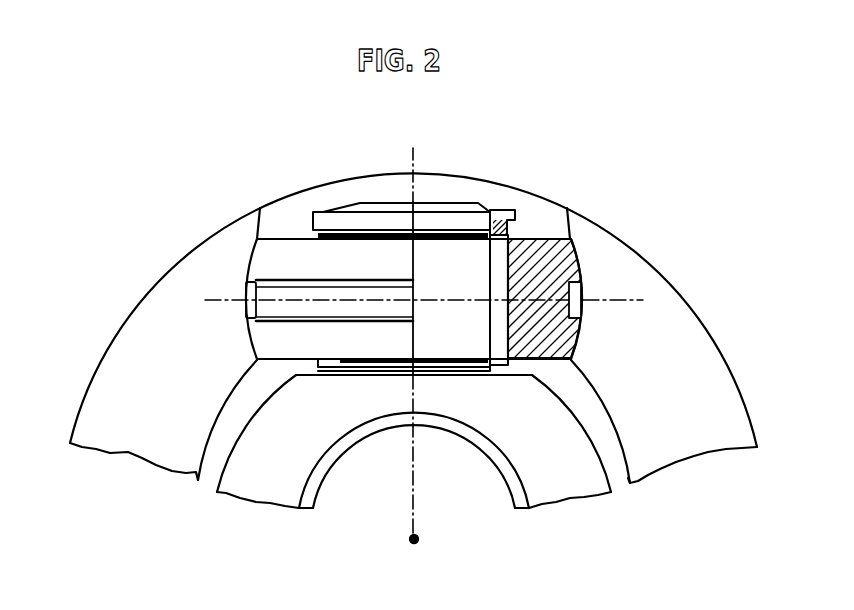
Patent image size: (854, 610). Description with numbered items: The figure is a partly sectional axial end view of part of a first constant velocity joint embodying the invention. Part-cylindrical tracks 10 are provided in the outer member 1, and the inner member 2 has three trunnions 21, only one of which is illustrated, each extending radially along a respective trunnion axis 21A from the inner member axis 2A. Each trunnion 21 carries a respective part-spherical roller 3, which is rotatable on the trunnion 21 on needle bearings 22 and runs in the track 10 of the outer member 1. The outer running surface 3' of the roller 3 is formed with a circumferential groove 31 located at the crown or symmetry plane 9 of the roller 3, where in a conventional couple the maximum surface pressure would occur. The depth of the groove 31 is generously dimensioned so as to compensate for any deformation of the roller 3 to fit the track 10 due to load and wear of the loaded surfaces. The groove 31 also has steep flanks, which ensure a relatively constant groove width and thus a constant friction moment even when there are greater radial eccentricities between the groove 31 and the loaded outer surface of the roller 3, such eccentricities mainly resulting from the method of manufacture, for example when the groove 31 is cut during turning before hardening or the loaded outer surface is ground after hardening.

The outer member 1 is at (122, 350).
The member 2 is at (247, 480).
The inner member axis 2A is at (419, 539).
The part-spherical roller 3 is at (424, 238).
The outer running surface 3' is at (535, 245).
The crown or symmetry plane 9 is at (618, 300).
The part-cylindrical track 10 is at (247, 307).
The trunnion 21 is at (433, 253).
The trunnion axis 21A is at (411, 165).
The needle bearings 22 is at (497, 263).
The circumferential groove 31 is at (256, 345).